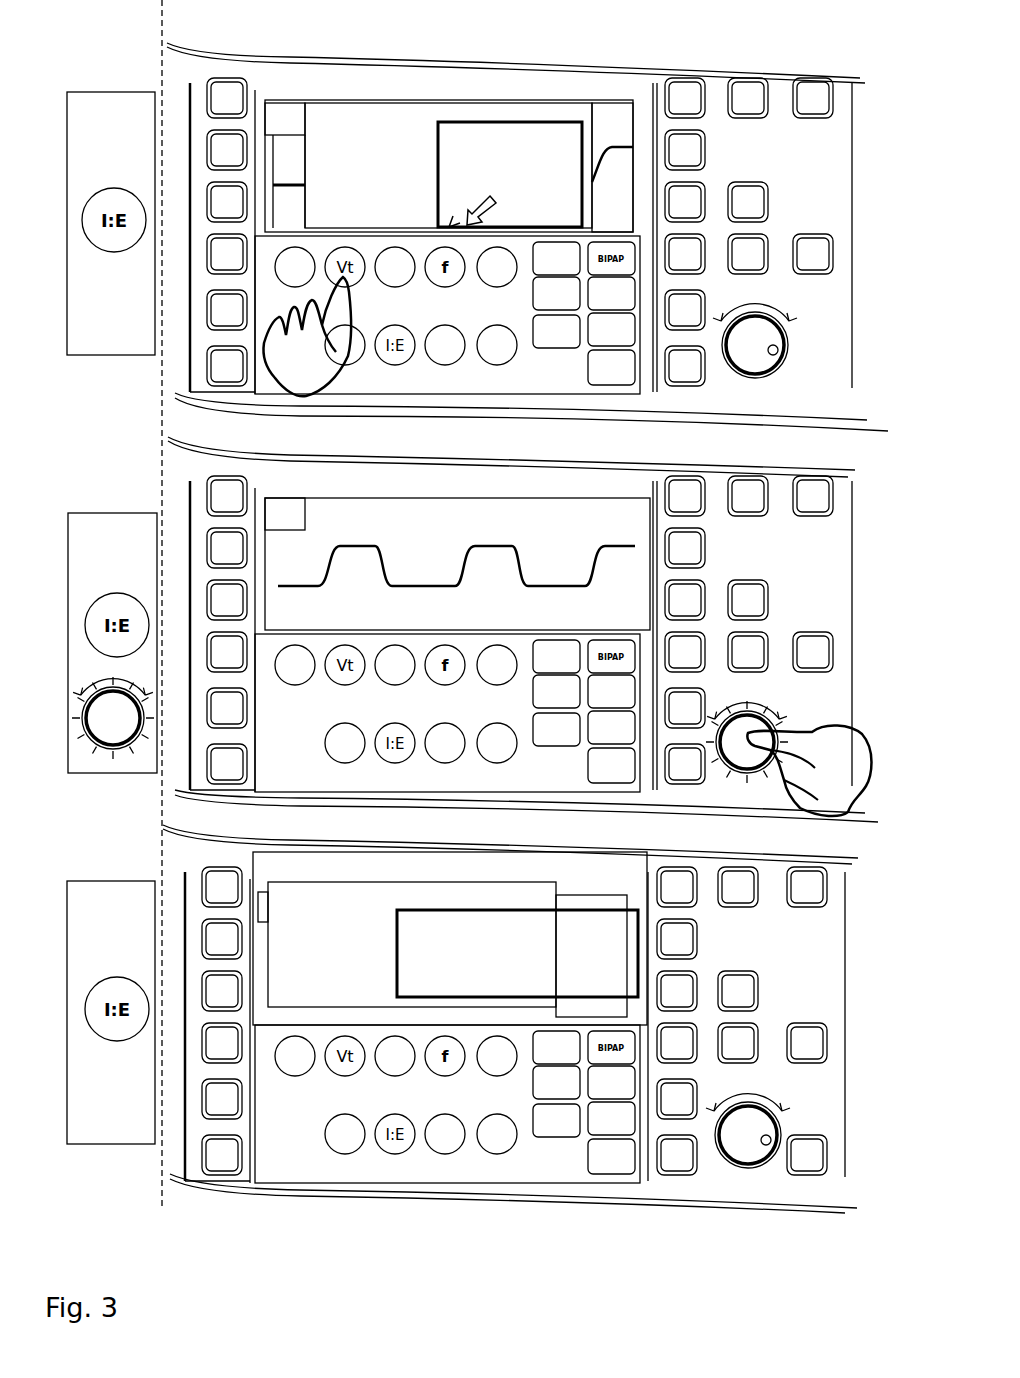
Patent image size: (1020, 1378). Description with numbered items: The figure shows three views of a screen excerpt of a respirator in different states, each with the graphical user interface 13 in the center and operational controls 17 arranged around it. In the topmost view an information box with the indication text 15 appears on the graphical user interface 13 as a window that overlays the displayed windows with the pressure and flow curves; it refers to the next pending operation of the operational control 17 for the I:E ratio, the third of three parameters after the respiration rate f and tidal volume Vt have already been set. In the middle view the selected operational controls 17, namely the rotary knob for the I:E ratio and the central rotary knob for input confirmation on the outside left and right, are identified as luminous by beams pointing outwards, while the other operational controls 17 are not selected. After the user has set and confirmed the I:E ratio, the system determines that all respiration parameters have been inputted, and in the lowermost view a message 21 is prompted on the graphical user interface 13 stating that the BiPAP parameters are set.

The graphical user interface 13 is at (380, 103).
The indication text 15 is at (568, 133).
The operational control 17 is at (358, 281).
The message 21 is at (538, 912).